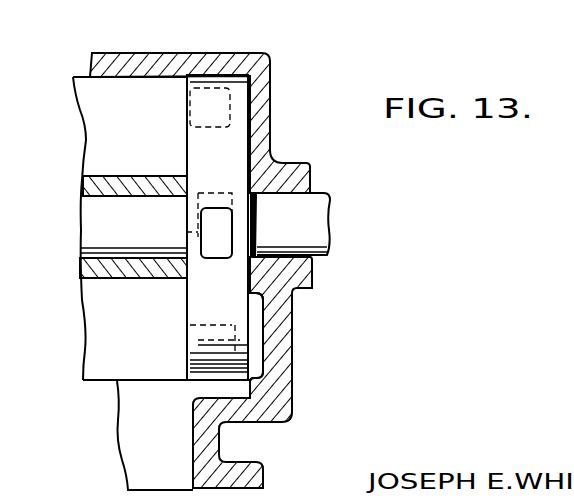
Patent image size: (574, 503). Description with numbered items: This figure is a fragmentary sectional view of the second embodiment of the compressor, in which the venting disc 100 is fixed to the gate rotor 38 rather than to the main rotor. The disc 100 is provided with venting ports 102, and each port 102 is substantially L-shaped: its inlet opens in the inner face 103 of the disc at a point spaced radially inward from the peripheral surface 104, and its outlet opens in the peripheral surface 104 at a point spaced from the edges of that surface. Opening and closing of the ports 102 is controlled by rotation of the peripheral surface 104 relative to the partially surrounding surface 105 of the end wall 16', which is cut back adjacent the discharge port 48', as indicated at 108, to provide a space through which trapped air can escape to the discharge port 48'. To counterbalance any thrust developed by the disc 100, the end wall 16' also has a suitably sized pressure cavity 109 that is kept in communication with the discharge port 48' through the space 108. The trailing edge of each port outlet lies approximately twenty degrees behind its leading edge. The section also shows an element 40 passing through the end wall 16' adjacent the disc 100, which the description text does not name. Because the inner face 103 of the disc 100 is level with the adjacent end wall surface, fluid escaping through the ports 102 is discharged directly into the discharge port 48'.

The partially surrounding surface 105 is at (217, 73).
The gate rotor 38 is at (88, 137).
The venting port 102 is at (232, 112).
The pin 40 is at (305, 205).
The inner face of the disc 103 is at (188, 295).
The disc 100 is at (182, 315).
The pressure cavity 109 is at (257, 347).
The peripheral surface 104 is at (267, 375).
The end wall 16' is at (216, 270).
The cut-back space 108 is at (228, 390).
The discharge port 48' is at (155, 435).